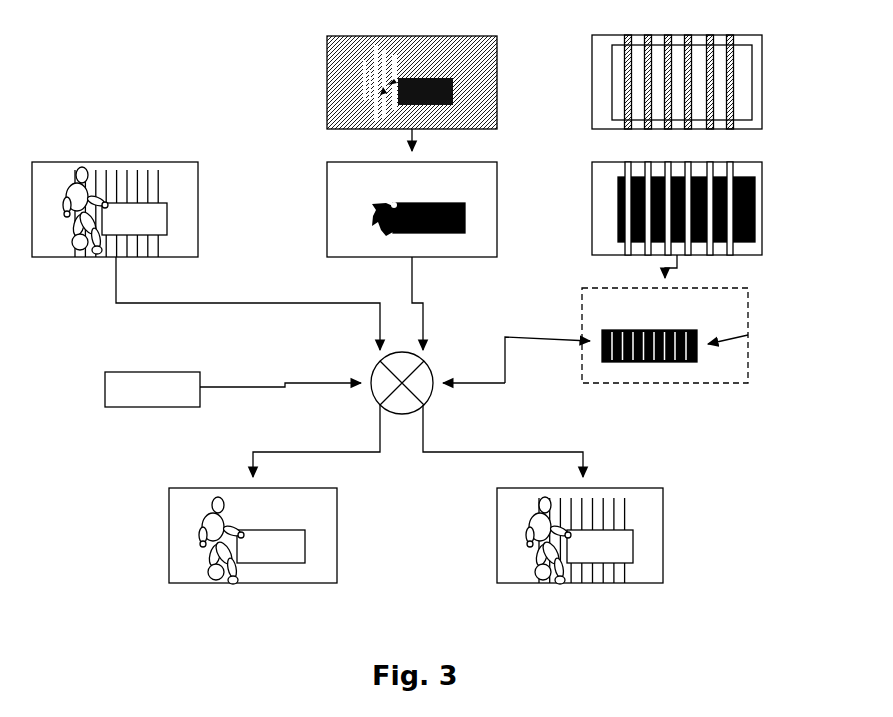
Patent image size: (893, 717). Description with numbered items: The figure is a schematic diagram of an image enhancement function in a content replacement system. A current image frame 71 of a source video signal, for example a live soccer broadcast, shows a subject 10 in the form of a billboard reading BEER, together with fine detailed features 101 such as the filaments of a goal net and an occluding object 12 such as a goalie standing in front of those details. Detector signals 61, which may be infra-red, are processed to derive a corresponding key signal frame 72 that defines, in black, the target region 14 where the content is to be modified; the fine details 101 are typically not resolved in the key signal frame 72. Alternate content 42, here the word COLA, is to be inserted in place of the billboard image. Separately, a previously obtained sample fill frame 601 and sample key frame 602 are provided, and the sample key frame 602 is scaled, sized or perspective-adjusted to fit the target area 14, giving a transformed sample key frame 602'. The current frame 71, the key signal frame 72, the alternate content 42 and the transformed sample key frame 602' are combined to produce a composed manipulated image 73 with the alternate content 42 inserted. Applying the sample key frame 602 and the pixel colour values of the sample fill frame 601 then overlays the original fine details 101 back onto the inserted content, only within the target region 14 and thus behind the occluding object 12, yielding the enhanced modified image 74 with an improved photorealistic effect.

The occluding object 12 is at (87, 169).
The detailed features 101 is at (158, 174).
The subject 10 is at (167, 218).
The current image frame 71 is at (133, 210).
The detector signals 61 is at (493, 130).
The target region 14 is at (467, 213).
The key signal frame 72 is at (430, 224).
The sample fill frame 601 is at (748, 130).
The sample key frame 602 is at (694, 224).
The transformed sample key frame 602' is at (665, 351).
The alternate content 42 is at (200, 400).
The composed manipulated image 73 is at (333, 584).
The enhanced modified image 74 is at (658, 584).